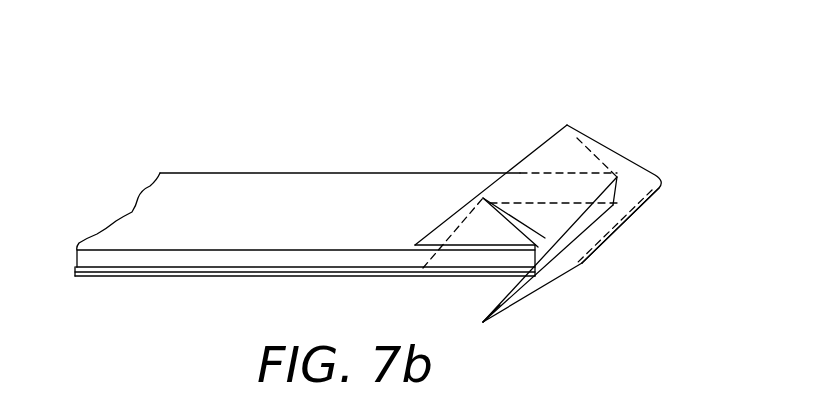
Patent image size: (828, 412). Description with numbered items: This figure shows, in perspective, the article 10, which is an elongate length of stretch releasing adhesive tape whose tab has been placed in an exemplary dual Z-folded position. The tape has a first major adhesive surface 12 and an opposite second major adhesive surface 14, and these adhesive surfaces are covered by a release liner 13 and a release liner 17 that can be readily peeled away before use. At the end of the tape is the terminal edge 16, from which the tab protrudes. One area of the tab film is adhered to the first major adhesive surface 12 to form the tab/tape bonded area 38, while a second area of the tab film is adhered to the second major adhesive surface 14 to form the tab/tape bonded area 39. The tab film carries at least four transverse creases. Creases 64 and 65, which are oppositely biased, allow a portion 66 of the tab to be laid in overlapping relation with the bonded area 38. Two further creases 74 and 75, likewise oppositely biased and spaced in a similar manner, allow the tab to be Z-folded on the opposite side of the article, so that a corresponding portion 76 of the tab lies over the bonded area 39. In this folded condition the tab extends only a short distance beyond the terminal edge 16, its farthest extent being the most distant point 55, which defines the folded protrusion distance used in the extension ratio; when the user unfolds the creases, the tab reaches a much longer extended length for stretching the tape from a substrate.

The article 10 is at (146, 134).
The first major adhesive surface 12 is at (187, 272).
The release liner 13 is at (106, 273).
The second major adhesive surface 14 is at (236, 172).
The terminal edge 16 is at (622, 185).
The release liner 17 is at (140, 212).
The tab/tape bonded area 38 is at (430, 270).
The tab/tape bonded area 39 is at (505, 170).
The most distant point 55 is at (617, 232).
The transverse crease 64 is at (540, 288).
The transverse crease 65 is at (500, 308).
The portion of the tab 66 is at (573, 257).
The crease 74 is at (593, 190).
The crease 75 is at (553, 134).
The fold 76 is at (527, 227).